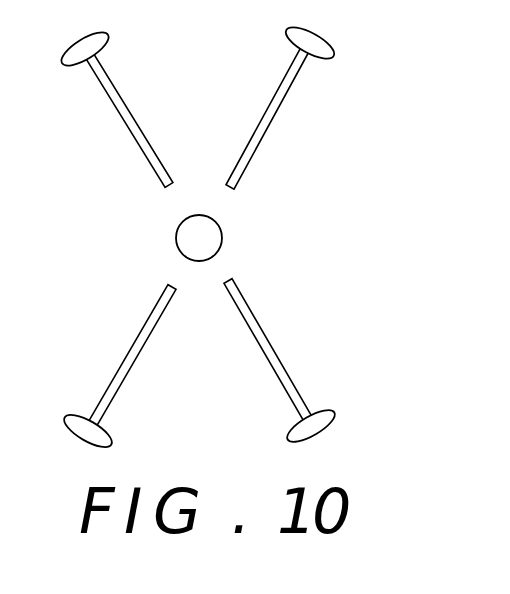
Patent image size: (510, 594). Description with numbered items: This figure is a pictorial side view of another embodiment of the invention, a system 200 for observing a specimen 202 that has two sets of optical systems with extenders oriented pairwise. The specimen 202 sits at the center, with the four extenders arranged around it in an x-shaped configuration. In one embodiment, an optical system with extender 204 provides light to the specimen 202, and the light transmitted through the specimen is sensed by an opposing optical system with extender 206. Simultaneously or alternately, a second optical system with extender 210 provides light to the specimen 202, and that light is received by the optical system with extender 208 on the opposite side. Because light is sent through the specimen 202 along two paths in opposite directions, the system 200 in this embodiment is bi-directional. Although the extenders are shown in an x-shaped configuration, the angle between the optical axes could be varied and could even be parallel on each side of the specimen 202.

The system 200 is at (361, 82).
The specimen 202 is at (222, 232).
The optical system with extender 204 is at (273, 122).
The optical system with extender 206 is at (142, 333).
The optical system with extender 208 is at (122, 119).
The optical system with extender 210 is at (263, 330).